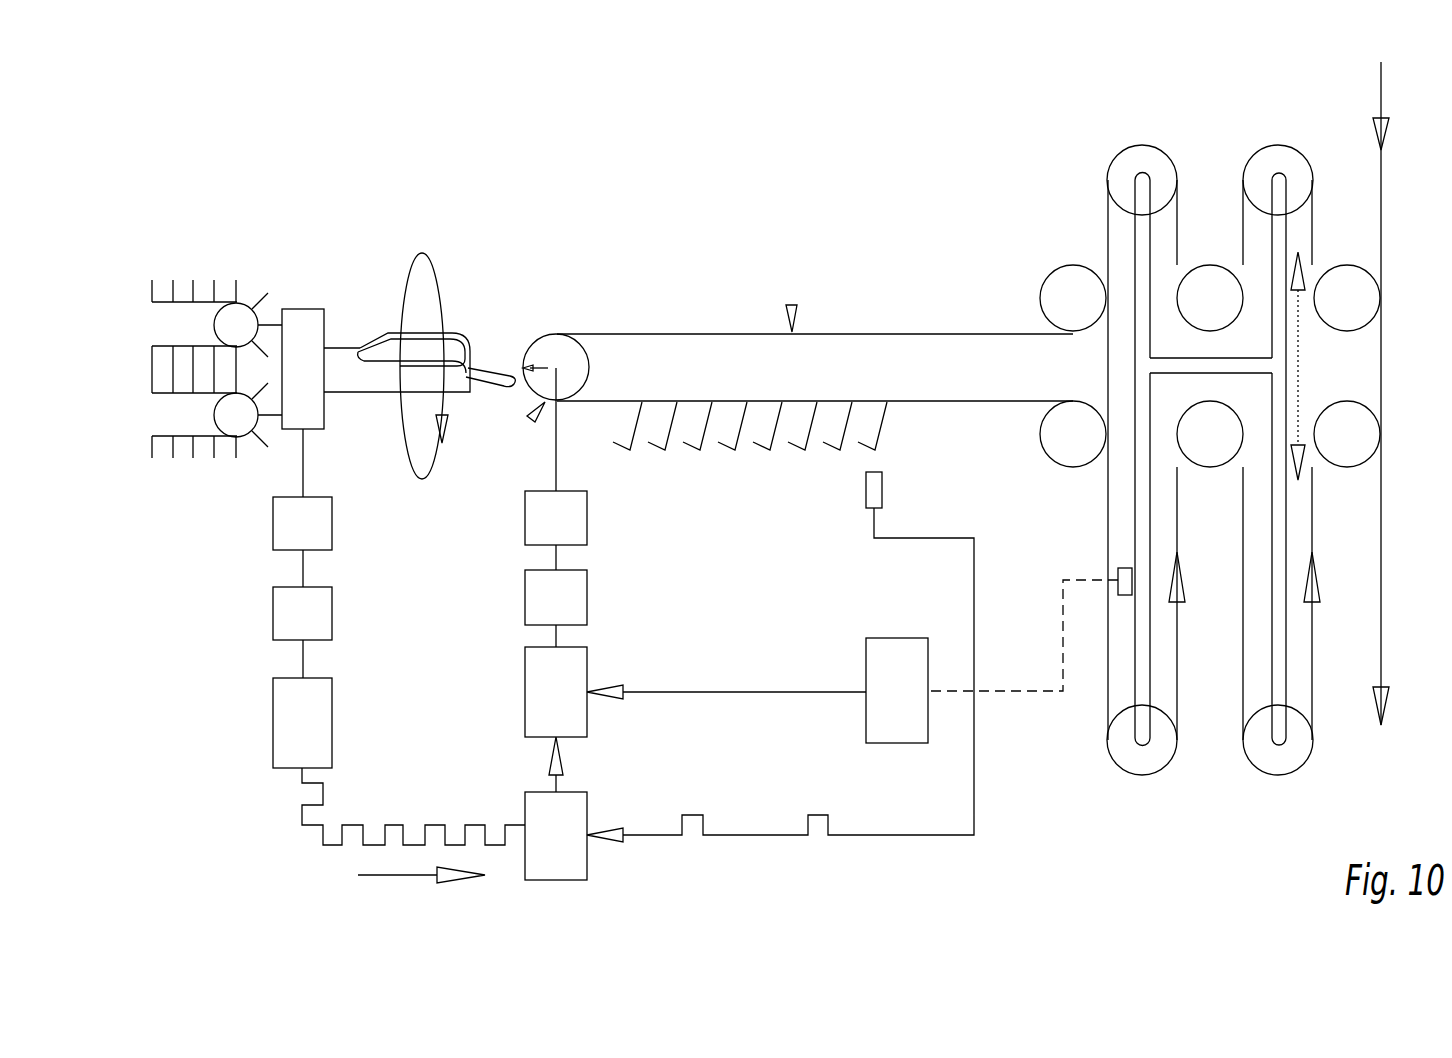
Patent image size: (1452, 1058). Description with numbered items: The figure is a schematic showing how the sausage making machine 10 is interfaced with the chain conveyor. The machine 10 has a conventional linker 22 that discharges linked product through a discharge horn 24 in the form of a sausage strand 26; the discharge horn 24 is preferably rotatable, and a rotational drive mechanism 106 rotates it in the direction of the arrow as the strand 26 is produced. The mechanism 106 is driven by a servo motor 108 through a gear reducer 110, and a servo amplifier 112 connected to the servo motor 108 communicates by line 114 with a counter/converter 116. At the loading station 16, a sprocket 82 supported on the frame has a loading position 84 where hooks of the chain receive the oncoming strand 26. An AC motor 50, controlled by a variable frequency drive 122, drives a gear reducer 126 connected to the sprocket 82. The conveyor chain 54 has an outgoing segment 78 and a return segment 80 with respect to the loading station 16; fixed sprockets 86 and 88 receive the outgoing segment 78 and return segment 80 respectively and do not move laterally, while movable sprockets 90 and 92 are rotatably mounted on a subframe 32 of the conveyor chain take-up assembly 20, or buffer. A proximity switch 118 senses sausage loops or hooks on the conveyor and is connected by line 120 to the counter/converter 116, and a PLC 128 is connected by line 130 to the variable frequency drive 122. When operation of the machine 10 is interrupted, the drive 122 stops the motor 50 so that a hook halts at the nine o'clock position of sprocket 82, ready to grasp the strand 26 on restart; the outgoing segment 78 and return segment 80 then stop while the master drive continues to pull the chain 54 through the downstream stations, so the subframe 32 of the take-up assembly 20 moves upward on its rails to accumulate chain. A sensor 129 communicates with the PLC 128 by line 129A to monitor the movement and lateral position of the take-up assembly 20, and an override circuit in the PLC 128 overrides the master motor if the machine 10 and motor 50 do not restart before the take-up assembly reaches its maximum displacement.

The sausage making machine 10 is at (196, 255).
The linker 22 is at (162, 302).
The rotational drive mechanism 106 is at (301, 309).
The discharge horn 24 is at (455, 335).
The sausage strand 26 is at (497, 384).
The loading station 16 is at (533, 421).
The loading position 84 is at (548, 368).
The sprocket 82 is at (580, 373).
The return segment 80 is at (637, 334).
The chain 54 is at (790, 305).
The outgoing segment 78 is at (733, 401).
The movable sprocket 92 is at (1131, 157).
The sprocket 88 is at (1053, 280).
The sprocket 86 is at (1058, 428).
The conveyor chain take-up assembly 20 is at (1118, 512).
The subframe 32 is at (1280, 518).
The sensor 129 is at (1120, 580).
The line 129A is at (1017, 691).
The movable sprocket 90 is at (1145, 763).
The proximity switch 118 is at (866, 485).
The PLC 128 is at (883, 638).
The line 130 is at (665, 692).
The line 120 is at (733, 835).
The counter/converter 116 is at (540, 792).
The line 114 is at (360, 823).
The variable frequency drive 122 is at (525, 675).
The AC motor 50 is at (525, 590).
The gear reducer 126 is at (525, 500).
The gear reducer 110 is at (273, 515).
The servo motor 108 is at (273, 612).
The servo amplifier 112 is at (273, 692).